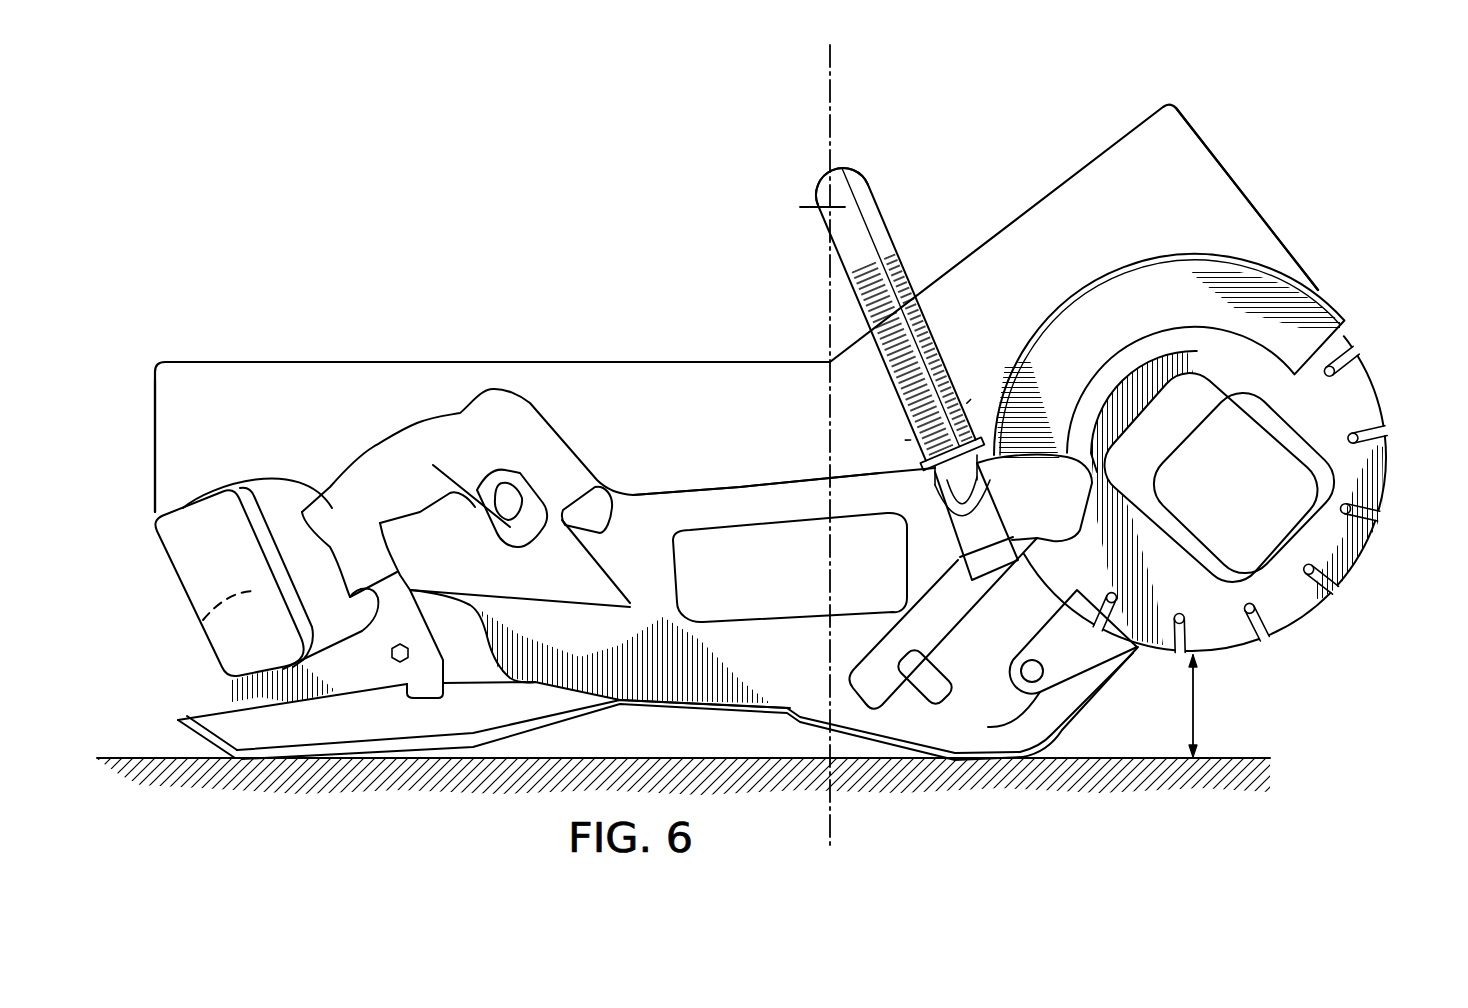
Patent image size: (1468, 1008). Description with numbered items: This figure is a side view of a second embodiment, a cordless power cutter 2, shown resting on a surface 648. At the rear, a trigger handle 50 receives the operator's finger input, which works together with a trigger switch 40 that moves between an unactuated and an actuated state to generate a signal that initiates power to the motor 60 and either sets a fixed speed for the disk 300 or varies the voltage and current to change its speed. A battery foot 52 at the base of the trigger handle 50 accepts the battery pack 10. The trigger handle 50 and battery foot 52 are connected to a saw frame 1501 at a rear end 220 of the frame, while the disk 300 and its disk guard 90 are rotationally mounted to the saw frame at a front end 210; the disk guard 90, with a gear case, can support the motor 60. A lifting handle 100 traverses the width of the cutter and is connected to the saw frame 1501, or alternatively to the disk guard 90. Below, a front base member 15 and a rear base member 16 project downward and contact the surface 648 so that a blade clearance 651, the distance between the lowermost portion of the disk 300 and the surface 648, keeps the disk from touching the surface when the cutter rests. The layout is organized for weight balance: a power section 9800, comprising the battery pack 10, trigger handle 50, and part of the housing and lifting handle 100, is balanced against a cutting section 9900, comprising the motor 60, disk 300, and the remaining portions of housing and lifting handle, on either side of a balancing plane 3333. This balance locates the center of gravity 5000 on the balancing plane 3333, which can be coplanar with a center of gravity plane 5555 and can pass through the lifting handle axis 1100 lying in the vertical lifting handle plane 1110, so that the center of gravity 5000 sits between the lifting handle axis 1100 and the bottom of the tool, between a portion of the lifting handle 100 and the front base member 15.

The cordless power cutter 2 is at (1324, 204).
The battery pack 10 is at (203, 618).
The front base member 15 is at (1003, 742).
The rear base member 16 is at (443, 718).
The trigger switch 40 is at (505, 532).
The trigger handle 50 is at (387, 477).
The battery foot 52 is at (278, 503).
The motor 60 is at (1270, 569).
The disk guard 90 is at (1158, 283).
The lifting handle 100 is at (872, 200).
The front end 210 is at (1390, 509).
The rear end 220 is at (159, 324).
The disk 300 is at (1389, 395).
The surface 648 is at (1132, 754).
The blade clearance 651 is at (1197, 700).
The lifting handle axis 1100 is at (827, 197).
The lifting handle plane 1110 is at (800, 207).
The saw frame 1501 is at (672, 492).
The balancing plane 3333 is at (832, 832).
The center of gravity 5000 is at (830, 537).
The center of gravity plane 5555 is at (830, 128).
The power section 9800 is at (490, 362).
The cutting section 9900 is at (996, 232).